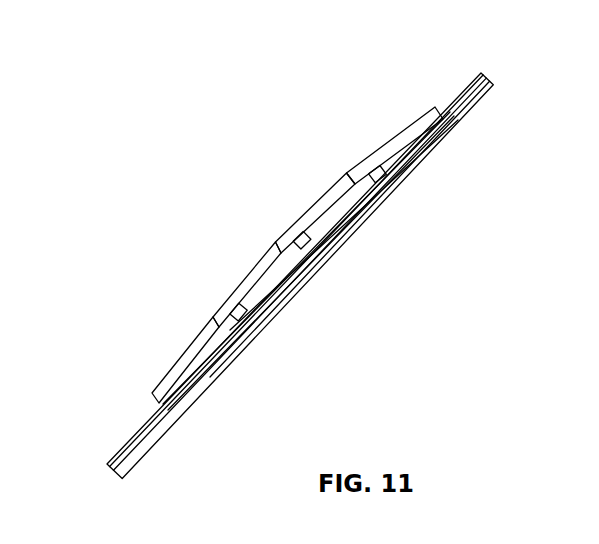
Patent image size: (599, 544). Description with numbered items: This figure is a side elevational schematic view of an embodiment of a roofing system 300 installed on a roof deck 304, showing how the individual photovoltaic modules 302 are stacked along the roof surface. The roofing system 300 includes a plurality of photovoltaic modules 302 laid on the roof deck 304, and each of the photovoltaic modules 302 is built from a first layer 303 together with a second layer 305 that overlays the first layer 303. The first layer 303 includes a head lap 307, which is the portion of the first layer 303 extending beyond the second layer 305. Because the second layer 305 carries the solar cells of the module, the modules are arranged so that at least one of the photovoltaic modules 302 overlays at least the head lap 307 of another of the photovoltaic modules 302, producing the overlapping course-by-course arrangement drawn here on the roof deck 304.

The roofing system 300 is at (269, 127).
The photovoltaic modules 302 is at (226, 312).
The first layer 303 is at (455, 103).
The roof deck 304 is at (417, 162).
The second layer 305 is at (390, 143).
The head lap 307 is at (250, 303).